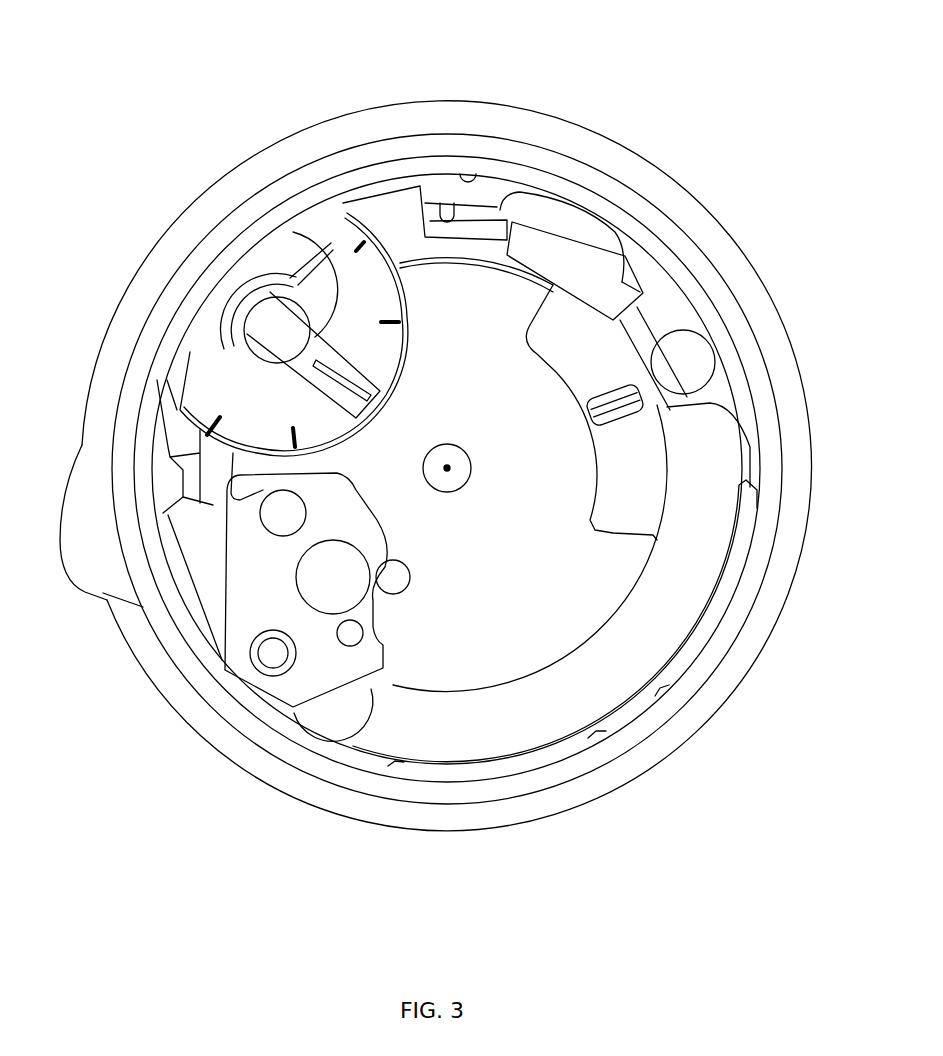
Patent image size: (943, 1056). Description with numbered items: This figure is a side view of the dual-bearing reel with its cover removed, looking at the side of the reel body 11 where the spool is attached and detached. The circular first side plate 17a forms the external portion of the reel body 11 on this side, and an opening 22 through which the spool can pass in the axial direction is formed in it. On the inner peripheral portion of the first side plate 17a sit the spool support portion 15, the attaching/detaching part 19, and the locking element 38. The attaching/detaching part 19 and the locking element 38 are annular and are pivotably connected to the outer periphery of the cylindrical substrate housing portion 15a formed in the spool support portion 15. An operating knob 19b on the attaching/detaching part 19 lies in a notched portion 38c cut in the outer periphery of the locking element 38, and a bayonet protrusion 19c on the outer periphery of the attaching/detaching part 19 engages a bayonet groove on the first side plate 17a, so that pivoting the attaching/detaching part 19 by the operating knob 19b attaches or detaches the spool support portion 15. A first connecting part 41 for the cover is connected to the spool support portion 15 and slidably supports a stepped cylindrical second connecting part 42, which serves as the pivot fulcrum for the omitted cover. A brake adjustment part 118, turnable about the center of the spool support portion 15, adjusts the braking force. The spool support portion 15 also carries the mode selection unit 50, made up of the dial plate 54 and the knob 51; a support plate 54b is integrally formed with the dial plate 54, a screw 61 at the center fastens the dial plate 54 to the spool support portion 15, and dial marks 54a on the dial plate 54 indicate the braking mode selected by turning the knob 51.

The reel body 11 is at (578, 100).
The spool support portion 15 is at (405, 250).
The cylindrical substrate housing portion 15a is at (640, 493).
The first side plate 17a is at (627, 202).
The attaching/detaching part 19 is at (587, 223).
The operating knob 19b is at (620, 280).
The bayonet protrusion 19c is at (497, 203).
The opening 22 is at (477, 173).
The locking element 38 is at (613, 690).
The notched portion 38c is at (446, 215).
The first connecting part 41 is at (310, 687).
The second connecting part 42 is at (273, 657).
The mode selection unit 50 is at (267, 243).
The knob 51 is at (313, 340).
The dial plate 54 is at (245, 392).
The dial marks 54a is at (195, 425).
The support plate 54b is at (420, 667).
The screw 61 is at (447, 492).
The brake adjustment part 118 is at (630, 315).